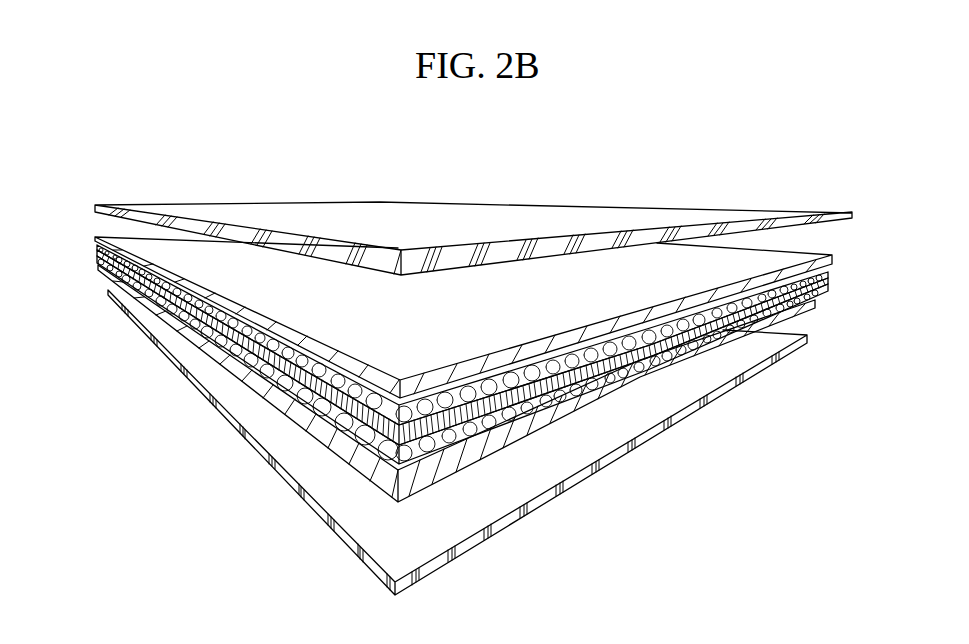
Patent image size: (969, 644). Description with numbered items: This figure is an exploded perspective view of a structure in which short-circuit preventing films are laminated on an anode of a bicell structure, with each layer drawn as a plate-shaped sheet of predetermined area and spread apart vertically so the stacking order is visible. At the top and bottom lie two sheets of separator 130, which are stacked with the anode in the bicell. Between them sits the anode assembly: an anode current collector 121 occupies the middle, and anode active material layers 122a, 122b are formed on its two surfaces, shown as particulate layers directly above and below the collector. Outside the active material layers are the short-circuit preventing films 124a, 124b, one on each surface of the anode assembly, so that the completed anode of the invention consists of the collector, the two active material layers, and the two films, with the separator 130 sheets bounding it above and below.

The separator 130 is at (241, 213).
The short-circuit preventing film 124a is at (718, 300).
The anode active material layer 122a is at (650, 332).
The anode current collector 121 is at (610, 362).
The anode active material layer 122b is at (548, 400).
The short-circuit preventing film 124b is at (457, 477).